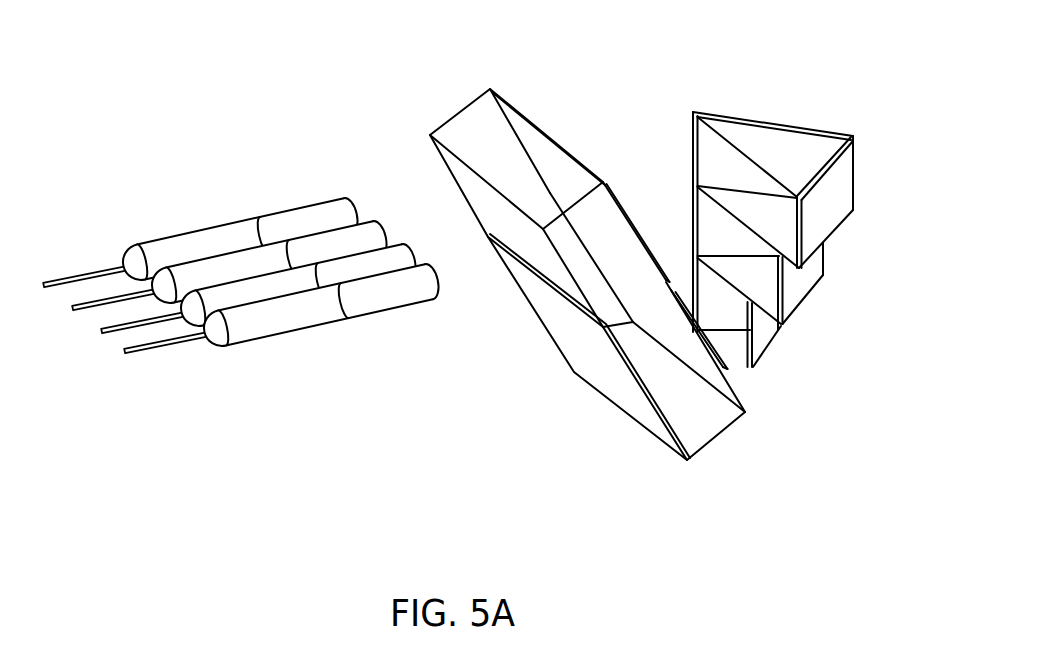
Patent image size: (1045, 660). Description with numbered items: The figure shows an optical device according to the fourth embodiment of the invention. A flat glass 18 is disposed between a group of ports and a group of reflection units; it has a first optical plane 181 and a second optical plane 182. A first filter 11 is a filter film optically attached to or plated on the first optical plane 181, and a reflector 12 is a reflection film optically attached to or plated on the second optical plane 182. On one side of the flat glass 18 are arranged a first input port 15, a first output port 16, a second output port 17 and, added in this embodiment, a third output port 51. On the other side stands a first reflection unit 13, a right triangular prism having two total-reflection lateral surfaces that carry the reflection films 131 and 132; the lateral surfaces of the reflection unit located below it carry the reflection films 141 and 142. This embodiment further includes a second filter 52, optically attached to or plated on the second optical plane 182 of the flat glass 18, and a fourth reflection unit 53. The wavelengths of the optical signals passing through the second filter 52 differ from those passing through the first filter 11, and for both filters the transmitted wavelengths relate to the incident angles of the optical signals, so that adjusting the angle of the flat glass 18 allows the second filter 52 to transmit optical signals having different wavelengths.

The first filter 11 is at (517, 179).
The reflector 12 is at (654, 339).
The first reflection unit 13 is at (756, 206).
The first input port 15 is at (184, 246).
The first output port 16 is at (413, 298).
The second output port 17 is at (357, 268).
The flat glass 18 is at (588, 251).
The third output port 51 is at (253, 266).
The second filter 52 is at (669, 288).
The fourth reflection unit 53 is at (723, 381).
The reflection film 131 is at (748, 118).
The reflection film 132 is at (843, 207).
The reflection film 141 is at (690, 213).
The reflection film 142 is at (812, 277).
The first optical plane 181 is at (737, 352).
The second optical plane 182 is at (472, 183).